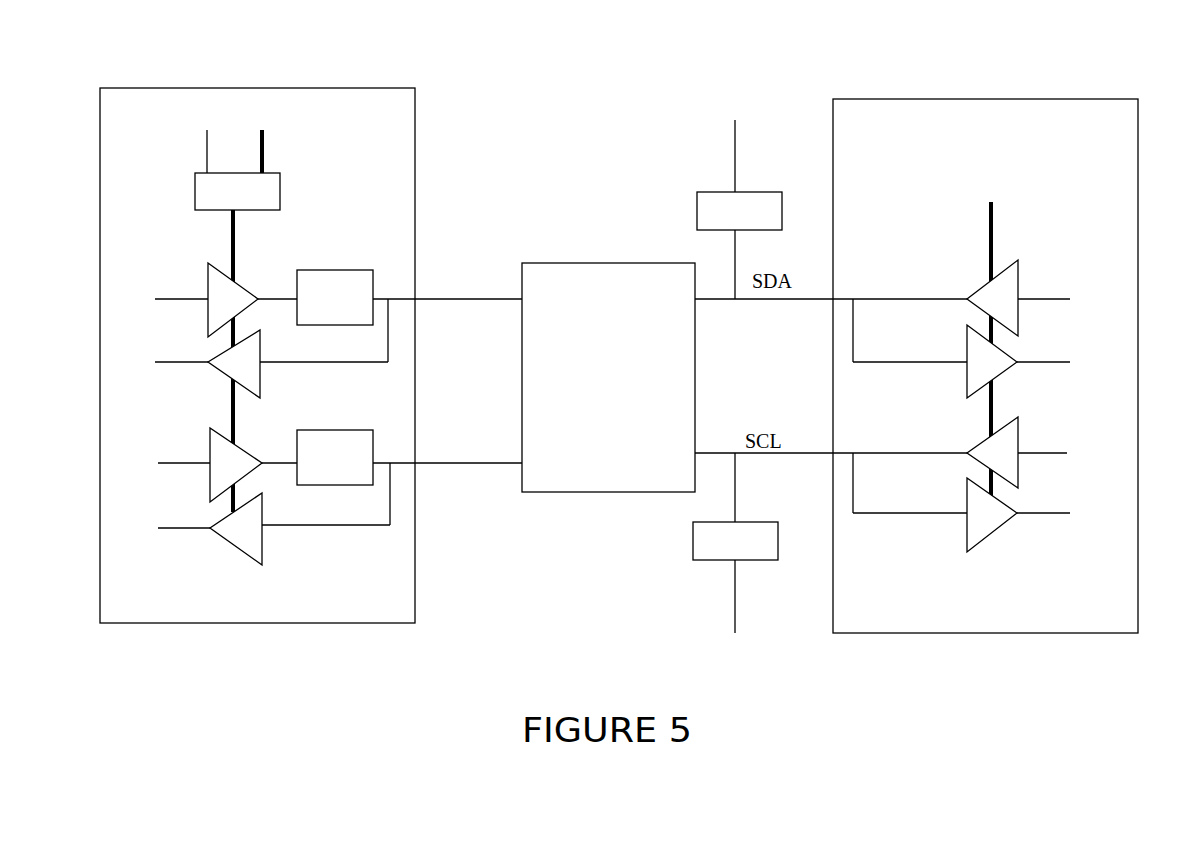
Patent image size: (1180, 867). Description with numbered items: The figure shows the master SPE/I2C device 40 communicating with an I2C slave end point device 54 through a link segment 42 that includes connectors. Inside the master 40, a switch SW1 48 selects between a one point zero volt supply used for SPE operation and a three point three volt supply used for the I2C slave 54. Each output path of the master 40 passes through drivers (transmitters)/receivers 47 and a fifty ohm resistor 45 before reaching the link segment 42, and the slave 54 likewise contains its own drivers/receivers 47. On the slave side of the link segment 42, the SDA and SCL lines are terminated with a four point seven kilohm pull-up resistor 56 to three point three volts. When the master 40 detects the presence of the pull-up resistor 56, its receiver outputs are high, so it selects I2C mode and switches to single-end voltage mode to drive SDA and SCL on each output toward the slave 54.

The master SPE/I2C device 40 is at (392, 88).
The link segment 42 is at (608, 263).
The 50 ohm resistor 45 is at (337, 270).
The drivers (transmitters)/receivers 47 is at (225, 523).
The switch SW1 48 is at (213, 203).
The I2C slave end point device 54 is at (1058, 99).
The pull-up resistor 56 is at (720, 192).